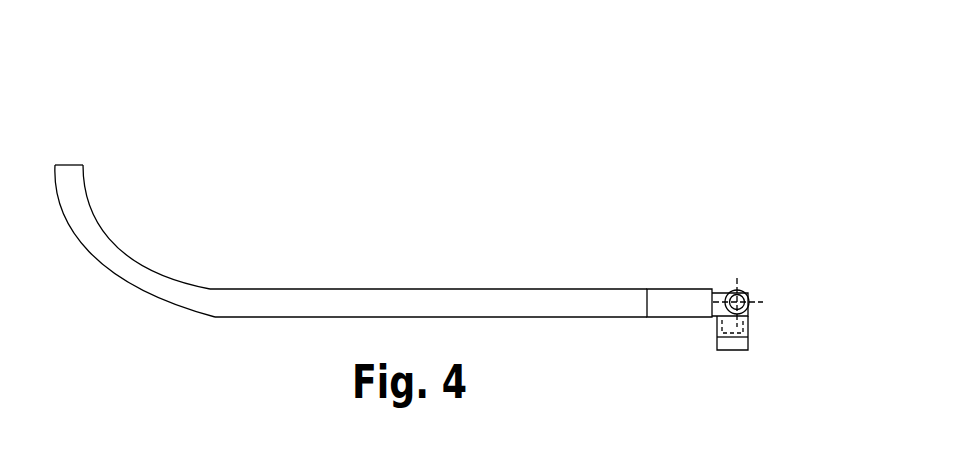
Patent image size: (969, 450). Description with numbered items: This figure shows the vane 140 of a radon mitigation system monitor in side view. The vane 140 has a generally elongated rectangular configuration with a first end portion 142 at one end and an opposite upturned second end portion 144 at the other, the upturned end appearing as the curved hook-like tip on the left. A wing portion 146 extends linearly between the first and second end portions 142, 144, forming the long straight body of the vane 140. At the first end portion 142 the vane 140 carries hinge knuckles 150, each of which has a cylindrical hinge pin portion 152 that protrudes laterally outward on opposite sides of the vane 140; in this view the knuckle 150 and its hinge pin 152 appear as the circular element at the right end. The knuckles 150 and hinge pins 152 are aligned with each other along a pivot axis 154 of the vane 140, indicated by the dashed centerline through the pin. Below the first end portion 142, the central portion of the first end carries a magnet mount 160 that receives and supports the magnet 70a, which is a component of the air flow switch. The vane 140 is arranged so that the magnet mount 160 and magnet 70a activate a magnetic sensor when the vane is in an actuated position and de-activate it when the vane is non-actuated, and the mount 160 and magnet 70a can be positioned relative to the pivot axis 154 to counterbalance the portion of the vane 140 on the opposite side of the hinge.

The vane 140 is at (358, 148).
The first end portion 142 is at (680, 297).
The upturned second end portion 144 is at (73, 193).
The wing portion 146 is at (380, 298).
The hinge knuckle 150 is at (725, 292).
The cylindrical hinge pin portion 152 is at (746, 292).
The pivot axis 154 is at (737, 302).
The magnet mount 160 is at (713, 327).
The magnet 70a is at (733, 353).